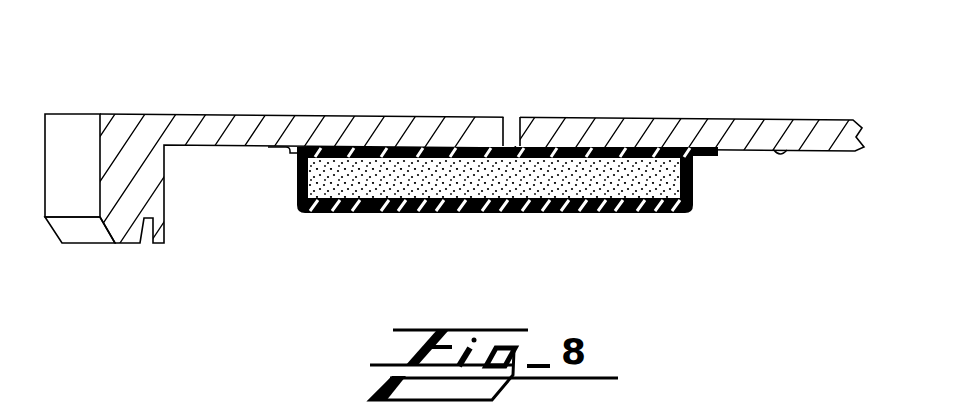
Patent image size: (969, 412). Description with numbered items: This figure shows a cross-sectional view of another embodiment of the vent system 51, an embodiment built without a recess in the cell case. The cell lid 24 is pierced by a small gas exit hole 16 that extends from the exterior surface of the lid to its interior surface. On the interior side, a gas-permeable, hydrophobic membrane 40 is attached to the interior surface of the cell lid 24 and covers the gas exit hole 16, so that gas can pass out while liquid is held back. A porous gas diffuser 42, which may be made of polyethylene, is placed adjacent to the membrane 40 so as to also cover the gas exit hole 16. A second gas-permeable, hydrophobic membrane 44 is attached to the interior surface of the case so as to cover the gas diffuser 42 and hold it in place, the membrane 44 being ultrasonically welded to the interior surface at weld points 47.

The cell lid 24 is at (312, 115).
The gas exit hole 16 is at (511, 117).
The gas-permeable, hydrophobic membrane 40 is at (575, 150).
The porous gas diffuser 42 is at (670, 192).
The gas-permeable, hydrophobic membrane 44 is at (559, 213).
The weld points 47 is at (781, 154).
The vent system 51 is at (384, 258).